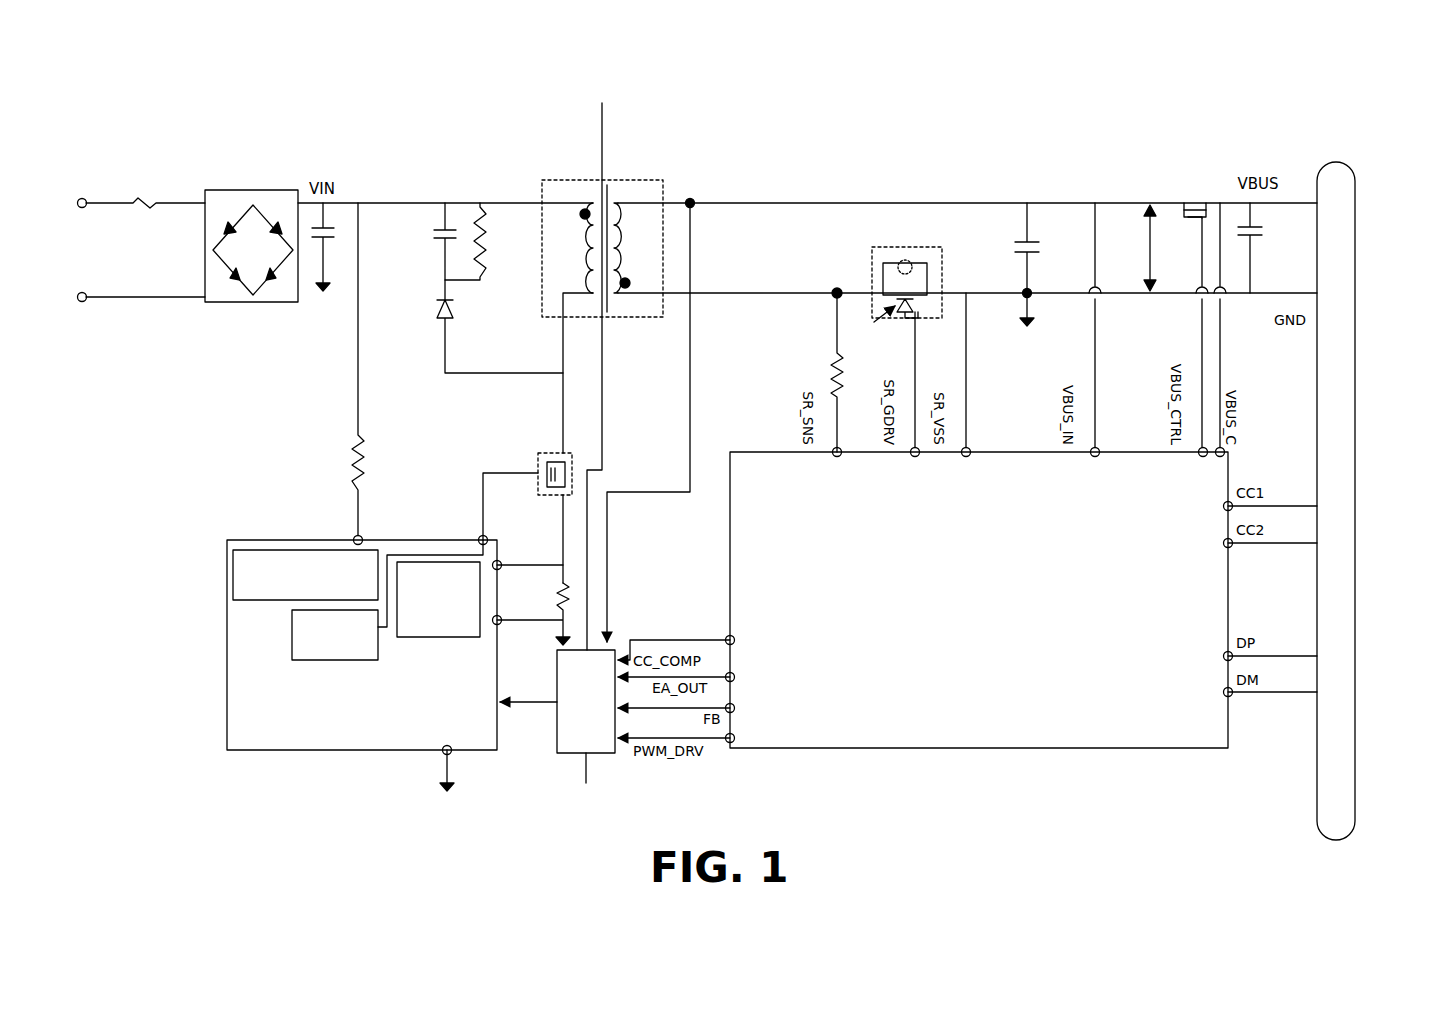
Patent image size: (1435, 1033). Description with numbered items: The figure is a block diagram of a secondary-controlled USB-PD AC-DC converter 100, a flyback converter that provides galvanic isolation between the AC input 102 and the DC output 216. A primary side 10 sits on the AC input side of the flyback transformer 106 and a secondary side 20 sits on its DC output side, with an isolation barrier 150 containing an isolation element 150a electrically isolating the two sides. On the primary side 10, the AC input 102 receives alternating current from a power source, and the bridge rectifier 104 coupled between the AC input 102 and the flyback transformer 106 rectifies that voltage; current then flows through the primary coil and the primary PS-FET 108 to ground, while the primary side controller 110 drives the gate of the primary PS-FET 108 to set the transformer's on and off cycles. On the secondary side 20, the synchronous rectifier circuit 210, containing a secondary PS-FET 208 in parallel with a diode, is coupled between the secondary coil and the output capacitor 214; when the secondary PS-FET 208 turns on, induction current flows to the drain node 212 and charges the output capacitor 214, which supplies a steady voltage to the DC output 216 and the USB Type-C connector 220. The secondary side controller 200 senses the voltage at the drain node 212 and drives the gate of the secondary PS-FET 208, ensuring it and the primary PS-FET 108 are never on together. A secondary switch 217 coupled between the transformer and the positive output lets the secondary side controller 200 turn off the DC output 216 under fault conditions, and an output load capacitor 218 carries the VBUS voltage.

The secondary-controlled USB-PD AC-DC converter 100 is at (824, 84).
The AC input 102 is at (130, 250).
The bridge rectifier 104 is at (247, 302).
The flyback transformer 106 is at (640, 317).
The primary power switch field-effect transistor 108 is at (538, 463).
The primary side controller 110 is at (362, 645).
The primary side 10 is at (514, 153).
The secondary side 20 is at (693, 153).
The isolation barrier 150 is at (605, 114).
The isolation element 150a is at (586, 716).
The secondary side controller 200 is at (979, 600).
The secondary PS-FET 208 is at (857, 372).
The synchronous rectifier circuit 210 is at (872, 252).
The drain node 212 is at (832, 298).
The output capacitor 214 is at (1011, 245).
The DC output 216 is at (1134, 248).
The secondary switch 217 is at (1200, 200).
The output load capacitor 218 is at (1263, 224).
The USB Type-C connector 220 is at (1357, 258).